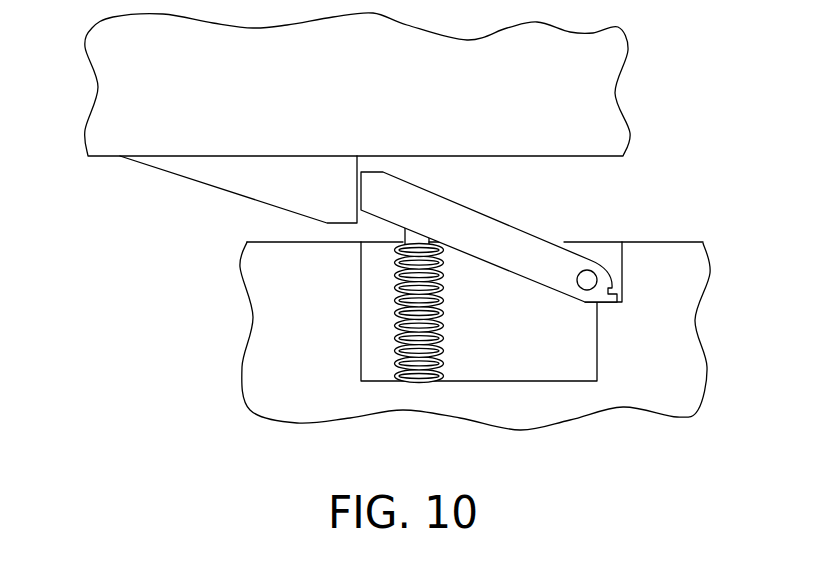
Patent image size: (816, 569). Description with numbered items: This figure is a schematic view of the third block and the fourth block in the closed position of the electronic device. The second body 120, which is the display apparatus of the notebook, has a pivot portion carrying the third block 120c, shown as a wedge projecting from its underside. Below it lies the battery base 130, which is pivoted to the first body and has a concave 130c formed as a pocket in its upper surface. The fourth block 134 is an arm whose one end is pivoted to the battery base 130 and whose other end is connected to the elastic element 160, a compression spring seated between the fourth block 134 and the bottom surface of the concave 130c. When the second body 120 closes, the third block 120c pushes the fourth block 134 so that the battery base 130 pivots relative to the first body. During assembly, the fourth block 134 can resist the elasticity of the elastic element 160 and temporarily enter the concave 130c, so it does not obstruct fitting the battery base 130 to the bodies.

The second body 120 is at (550, 72).
The third block 120c is at (240, 178).
The fourth block 134 is at (502, 240).
The battery base 130 is at (283, 315).
The concave 130c is at (531, 380).
The elastic element 160 is at (392, 345).